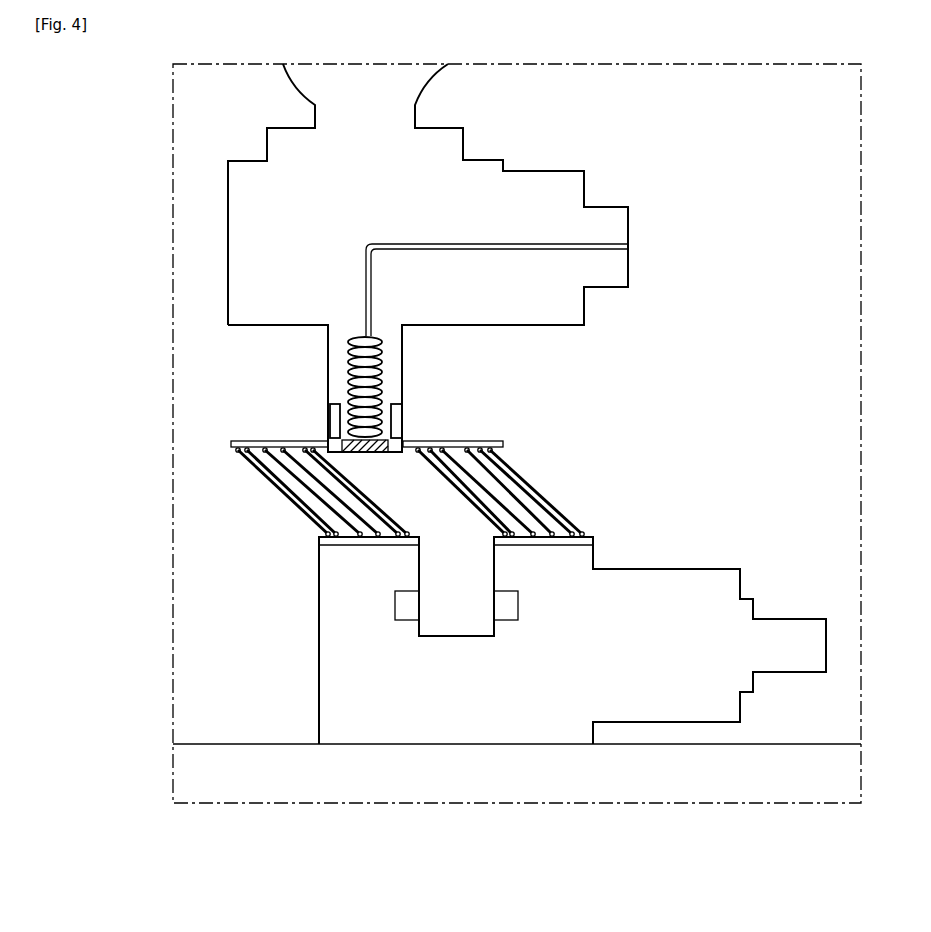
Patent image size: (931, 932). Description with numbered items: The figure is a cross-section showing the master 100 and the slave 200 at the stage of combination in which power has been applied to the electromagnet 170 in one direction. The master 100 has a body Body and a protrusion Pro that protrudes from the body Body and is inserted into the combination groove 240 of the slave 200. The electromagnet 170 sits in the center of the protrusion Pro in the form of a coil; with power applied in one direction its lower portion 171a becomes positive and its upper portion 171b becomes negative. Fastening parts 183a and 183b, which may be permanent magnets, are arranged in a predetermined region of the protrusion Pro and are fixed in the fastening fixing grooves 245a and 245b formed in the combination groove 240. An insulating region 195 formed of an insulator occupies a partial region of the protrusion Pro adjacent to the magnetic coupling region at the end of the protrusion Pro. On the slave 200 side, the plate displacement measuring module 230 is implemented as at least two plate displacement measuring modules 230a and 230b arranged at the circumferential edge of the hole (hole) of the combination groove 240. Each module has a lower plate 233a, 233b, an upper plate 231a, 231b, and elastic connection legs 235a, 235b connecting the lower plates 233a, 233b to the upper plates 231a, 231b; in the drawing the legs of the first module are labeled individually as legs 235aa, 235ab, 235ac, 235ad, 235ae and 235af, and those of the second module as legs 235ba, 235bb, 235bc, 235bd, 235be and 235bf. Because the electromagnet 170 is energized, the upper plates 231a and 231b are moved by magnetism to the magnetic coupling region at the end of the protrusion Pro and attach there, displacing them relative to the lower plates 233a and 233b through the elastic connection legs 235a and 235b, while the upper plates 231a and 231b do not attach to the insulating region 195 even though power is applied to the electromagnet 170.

The master 100 is at (215, 180).
The body Body is at (243, 240).
The protrusion Pro is at (328, 352).
The electromagnet 170 is at (348, 380).
The lower portion of the electromagnet 171a is at (352, 437).
The upper portion of the electromagnet 171b is at (328, 333).
The fastening part 183a is at (338, 426).
The fastening part 183b is at (396, 426).
The insulating region 195 is at (345, 445).
The hole of the combination groove hole is at (457, 543).
The plate displacement measuring module 230 is at (97, 273).
The plate displacement measuring module 230a is at (240, 441).
The plate displacement measuring module 230b is at (467, 433).
The upper plate 231a is at (232, 441).
The upper plate 231b is at (505, 441).
The elastic connection legs 235a is at (95, 435).
The first wire 235aa is at (290, 470).
The second wire 235ab is at (327, 487).
The third wire 235ac is at (316, 503).
The fourth wire 235ad is at (331, 519).
The fifth wire 235ae is at (322, 530).
The sixth wire 235af is at (338, 533).
The lower plate 233a is at (335, 542).
The lower plate 233b is at (590, 542).
The elastic connection legs 235b is at (855, 858).
The first wire 235ba is at (505, 540).
The second wire 235bb is at (512, 540).
The third wire 235bc is at (533, 540).
The fourth wire 235bd is at (552, 540).
The fifth wire 235be is at (572, 540).
The sixth wire 235bf is at (583, 538).
The slave 200 is at (308, 670).
The fastening fixing groove 245a is at (406, 605).
The fastening fixing groove 245b is at (508, 605).
The combination groove 240 is at (448, 607).